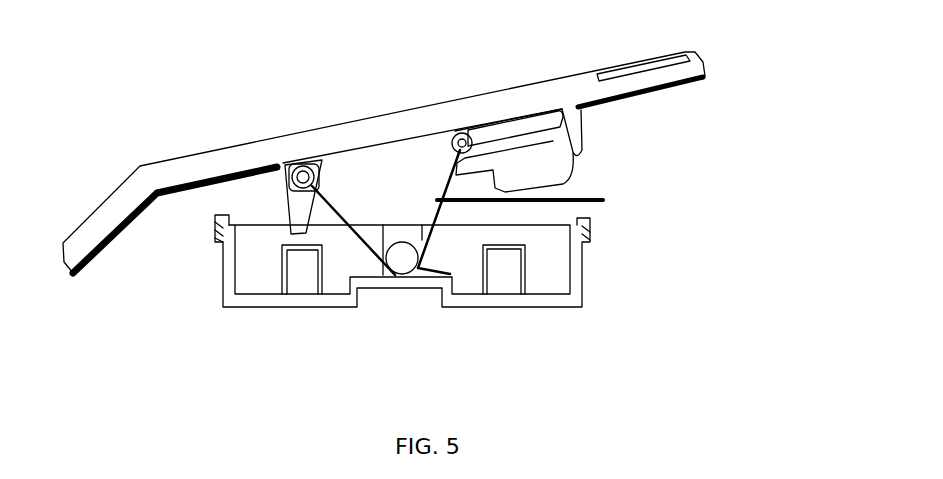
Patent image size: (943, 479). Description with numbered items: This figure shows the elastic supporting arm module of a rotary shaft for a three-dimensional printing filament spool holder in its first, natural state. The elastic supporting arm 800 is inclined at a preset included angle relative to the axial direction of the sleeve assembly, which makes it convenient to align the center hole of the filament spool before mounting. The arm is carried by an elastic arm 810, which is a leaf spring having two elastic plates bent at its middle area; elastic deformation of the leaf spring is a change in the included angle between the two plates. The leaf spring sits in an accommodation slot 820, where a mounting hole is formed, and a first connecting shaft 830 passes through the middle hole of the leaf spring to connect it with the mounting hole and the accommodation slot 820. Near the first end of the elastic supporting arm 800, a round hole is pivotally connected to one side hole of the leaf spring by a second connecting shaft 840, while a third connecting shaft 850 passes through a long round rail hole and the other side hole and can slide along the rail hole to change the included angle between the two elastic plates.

The elastic supporting arm 800 is at (578, 100).
The elastic arm 810 is at (562, 223).
The accommodation slot 820 is at (500, 288).
The first connecting shaft 830 is at (403, 267).
The second connecting shaft 840 is at (302, 174).
The third connecting shaft 850 is at (462, 143).